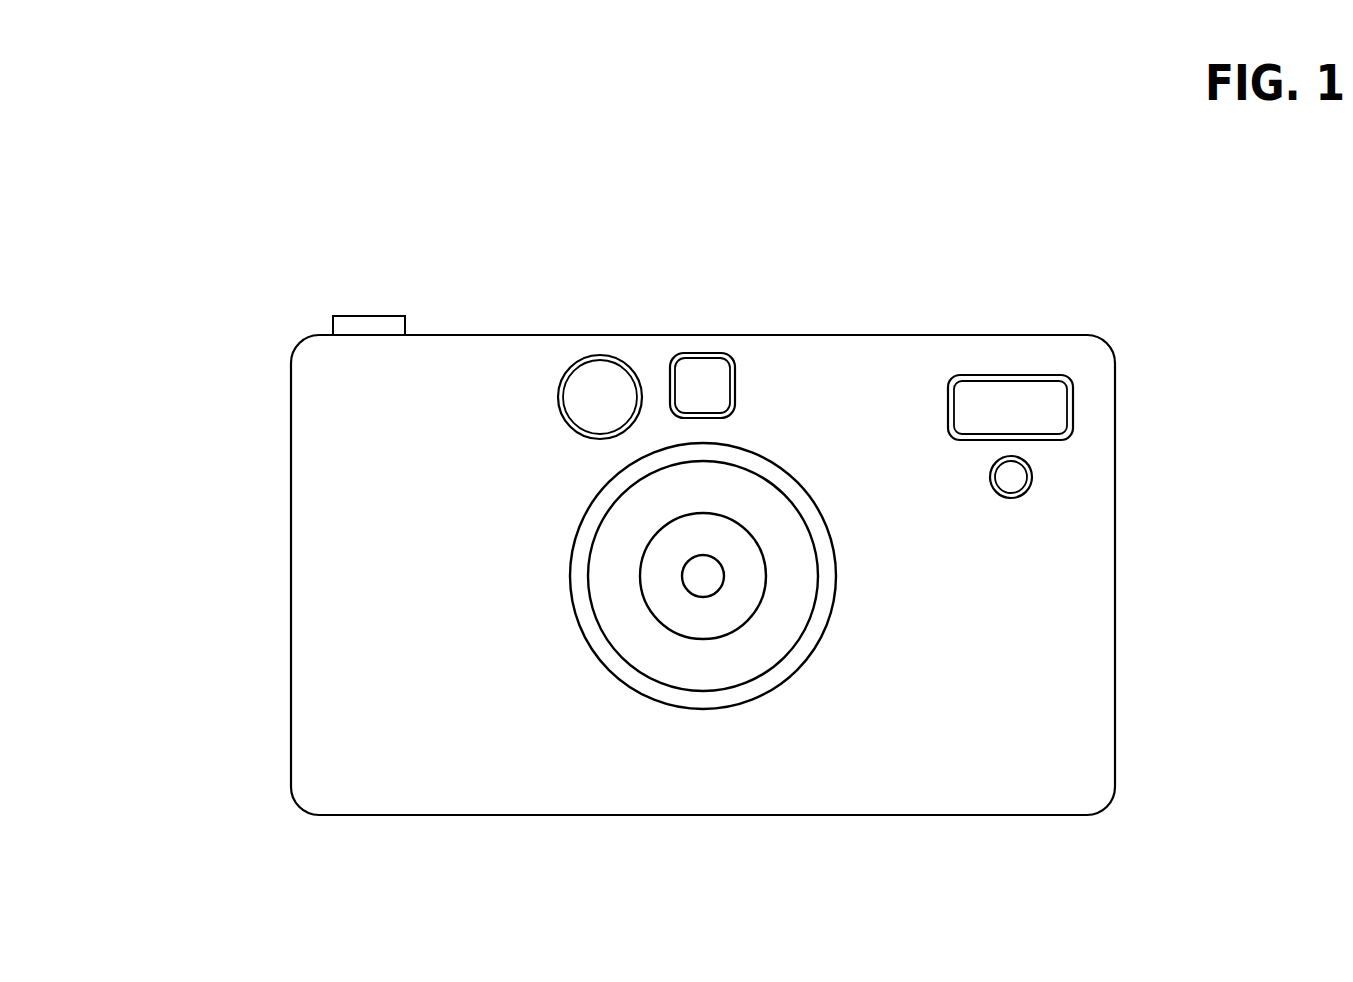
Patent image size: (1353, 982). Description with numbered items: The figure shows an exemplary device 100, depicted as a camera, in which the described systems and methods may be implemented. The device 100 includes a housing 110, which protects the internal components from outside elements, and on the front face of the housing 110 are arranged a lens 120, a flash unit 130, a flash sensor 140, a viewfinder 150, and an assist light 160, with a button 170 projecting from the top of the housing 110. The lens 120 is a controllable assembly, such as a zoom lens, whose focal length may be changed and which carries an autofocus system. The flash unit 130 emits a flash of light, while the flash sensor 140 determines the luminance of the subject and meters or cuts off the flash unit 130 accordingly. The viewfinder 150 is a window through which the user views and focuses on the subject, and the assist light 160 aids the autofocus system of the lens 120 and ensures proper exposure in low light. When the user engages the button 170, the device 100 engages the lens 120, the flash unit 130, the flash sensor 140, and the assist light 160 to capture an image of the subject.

The device 100 is at (208, 131).
The housing 110 is at (291, 578).
The lens 120 is at (837, 578).
The flash unit 130 is at (1012, 403).
The flash sensor 140 is at (1013, 479).
The viewfinder 150 is at (704, 378).
The assist light 160 is at (598, 378).
The button 170 is at (370, 327).